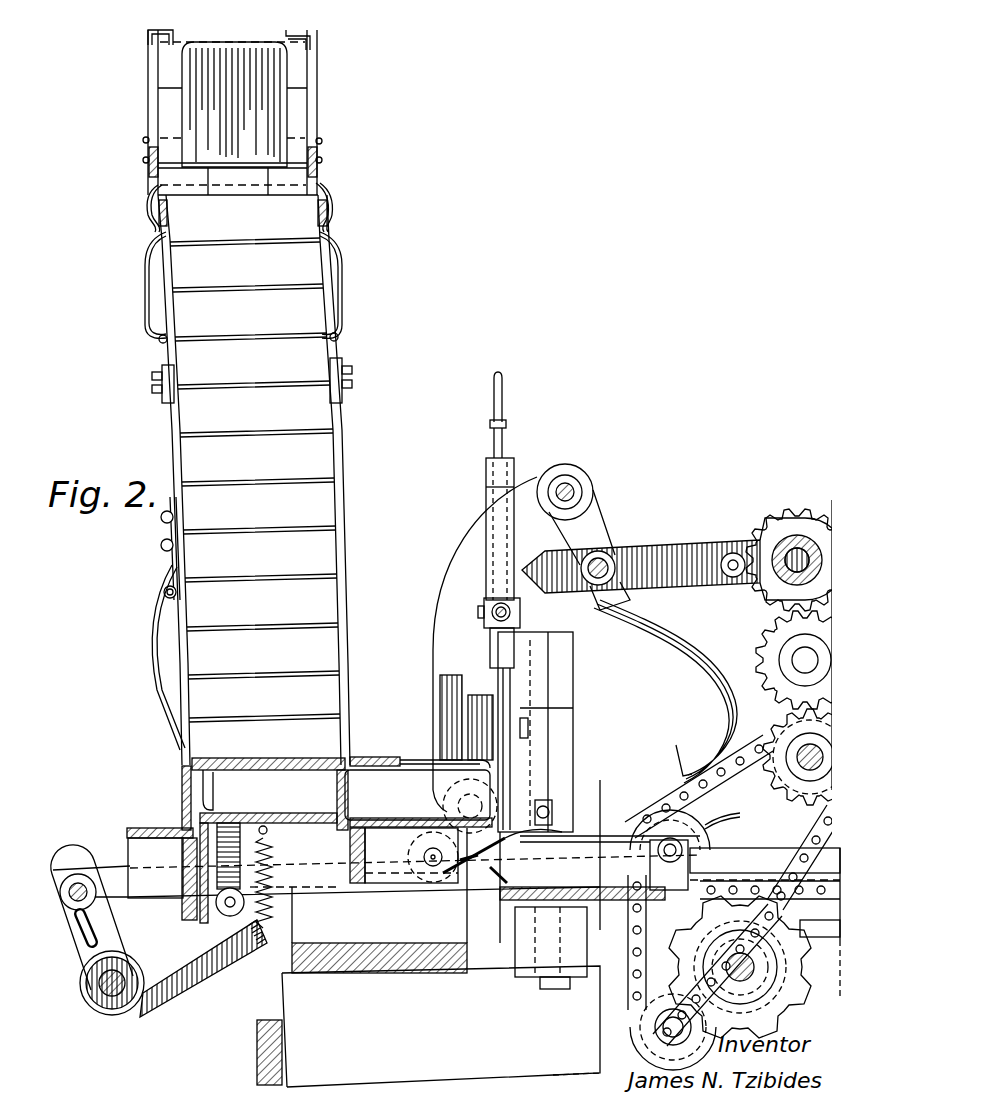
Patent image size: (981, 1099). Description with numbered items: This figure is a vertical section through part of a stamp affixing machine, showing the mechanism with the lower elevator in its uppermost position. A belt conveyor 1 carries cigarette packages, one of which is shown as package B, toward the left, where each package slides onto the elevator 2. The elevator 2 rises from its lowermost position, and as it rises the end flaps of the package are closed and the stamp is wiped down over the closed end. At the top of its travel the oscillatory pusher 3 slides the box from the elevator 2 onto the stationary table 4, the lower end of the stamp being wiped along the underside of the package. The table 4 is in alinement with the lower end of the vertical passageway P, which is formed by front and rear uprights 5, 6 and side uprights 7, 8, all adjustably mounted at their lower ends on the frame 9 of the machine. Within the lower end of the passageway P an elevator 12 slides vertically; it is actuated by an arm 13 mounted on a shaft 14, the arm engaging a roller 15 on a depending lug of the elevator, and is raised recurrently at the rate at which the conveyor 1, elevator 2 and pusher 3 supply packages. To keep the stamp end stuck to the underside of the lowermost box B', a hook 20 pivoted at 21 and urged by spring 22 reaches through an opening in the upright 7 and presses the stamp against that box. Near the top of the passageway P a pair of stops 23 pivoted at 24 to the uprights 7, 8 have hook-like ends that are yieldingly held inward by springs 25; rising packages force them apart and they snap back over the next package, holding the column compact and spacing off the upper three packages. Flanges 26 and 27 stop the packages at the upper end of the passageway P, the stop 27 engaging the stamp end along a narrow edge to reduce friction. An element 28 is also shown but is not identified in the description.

The belt conveyor 1 is at (812, 883).
The elevator 2 is at (600, 905).
The oscillatory pusher 3 is at (670, 642).
The stationary table 4 is at (400, 828).
The front upright 5 is at (502, 867).
The rear upright 6 is at (343, 441).
The side upright 7 is at (176, 448).
The side upright 8 is at (346, 584).
The frame 9 is at (383, 968).
The elevator 12 is at (302, 797).
The arm 13 is at (190, 950).
The shaft 14 is at (103, 1012).
The roller 15 is at (233, 952).
The hook 20 is at (180, 672).
The pivot 21 is at (169, 598).
The spring 22 is at (168, 593).
The stops 23 is at (145, 288).
The pivots 24 is at (160, 341).
The springs 25 is at (150, 190).
The flange stop 26 is at (300, 33).
The flange stop 27 is at (147, 32).
The shuttle 28 is at (236, 58).
The passageway P is at (350, 522).
The package B is at (630, 830).
The lowermost box B' is at (235, 786).